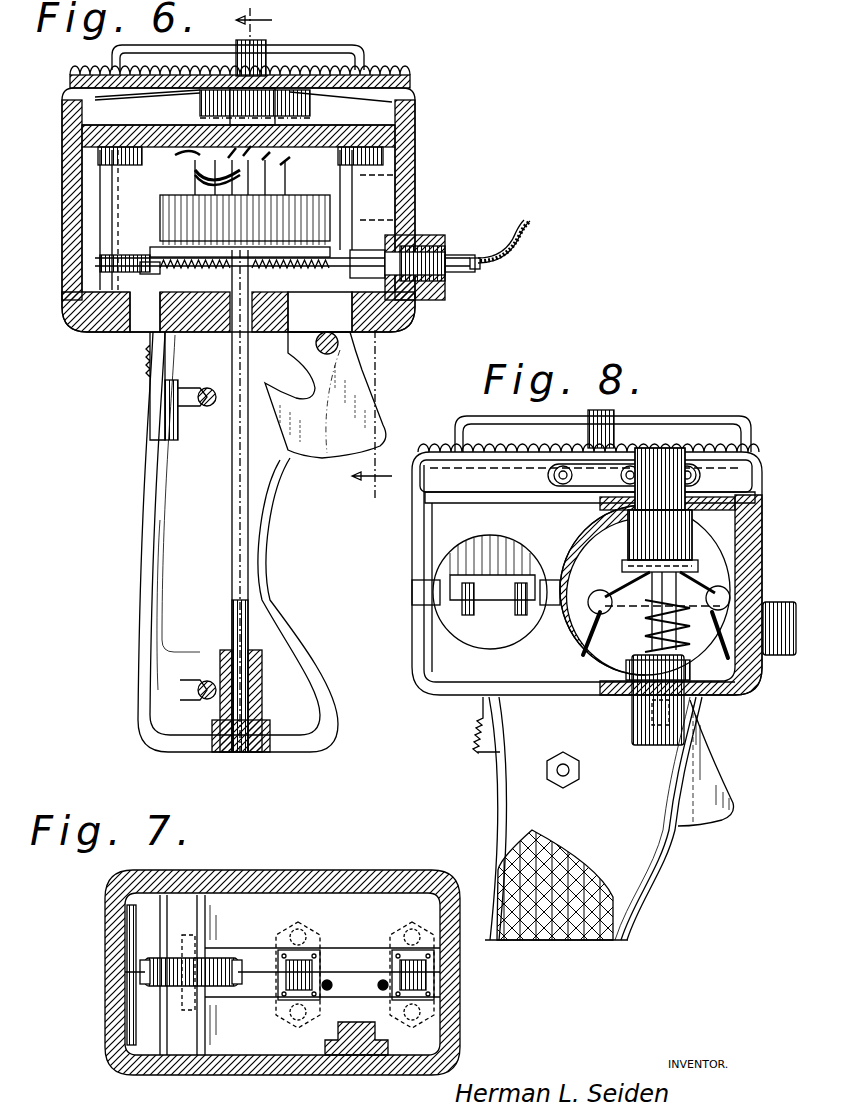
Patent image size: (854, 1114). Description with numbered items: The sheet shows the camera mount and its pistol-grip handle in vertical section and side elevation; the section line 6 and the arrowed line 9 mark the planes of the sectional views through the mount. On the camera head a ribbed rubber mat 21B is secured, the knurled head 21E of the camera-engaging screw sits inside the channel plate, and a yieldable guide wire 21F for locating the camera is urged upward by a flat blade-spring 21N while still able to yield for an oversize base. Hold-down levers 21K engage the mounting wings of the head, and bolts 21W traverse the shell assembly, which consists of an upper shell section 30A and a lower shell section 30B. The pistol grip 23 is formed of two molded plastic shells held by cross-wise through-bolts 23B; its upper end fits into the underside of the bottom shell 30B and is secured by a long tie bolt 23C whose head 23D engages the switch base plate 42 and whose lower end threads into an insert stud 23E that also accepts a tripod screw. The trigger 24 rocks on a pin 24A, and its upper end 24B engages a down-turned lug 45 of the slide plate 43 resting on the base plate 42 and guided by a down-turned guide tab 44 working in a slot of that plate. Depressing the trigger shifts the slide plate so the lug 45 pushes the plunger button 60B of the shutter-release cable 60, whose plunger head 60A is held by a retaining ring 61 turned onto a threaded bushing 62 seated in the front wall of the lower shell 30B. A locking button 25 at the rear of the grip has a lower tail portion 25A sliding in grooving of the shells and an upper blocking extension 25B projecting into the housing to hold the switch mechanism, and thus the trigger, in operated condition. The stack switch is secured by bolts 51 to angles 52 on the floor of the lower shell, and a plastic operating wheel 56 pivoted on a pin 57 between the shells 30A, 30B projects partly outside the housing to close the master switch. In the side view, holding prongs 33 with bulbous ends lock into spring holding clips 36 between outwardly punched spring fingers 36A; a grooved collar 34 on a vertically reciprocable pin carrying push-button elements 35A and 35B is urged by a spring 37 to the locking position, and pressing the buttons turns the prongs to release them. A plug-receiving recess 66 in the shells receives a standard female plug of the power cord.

In FIG. 8, the section line 6 is at (520, 608).
In FIG. 6, the section line 9 is at (319, 254).
In FIG. 6, the ribbed rubber mat 21B is at (405, 70).
In FIG. 6, the knurled head 21E is at (199, 99).
In FIG. 6, the guide wire 21F is at (340, 46).
In FIG. 8, the hold-down levers 21K is at (552, 470).
In FIG. 6, the flat blade-spring 21N is at (345, 108).
In FIG. 6, the bolts 21W is at (100, 168).
In FIG. 6, the pistol grip 23 is at (140, 530).
In FIG. 8, the pistol grip 23 is at (632, 886).
In FIG. 6, the through-bolts 23B is at (205, 408).
In FIG. 8, the through-bolts 23B is at (556, 786).
In FIG. 6, the tie bolt 23C is at (240, 512).
In FIG. 6, the head 23D is at (240, 247).
In FIG. 6, the insert stud 23E is at (255, 700).
In FIG. 6, the control trigger 24 is at (362, 420).
In FIG. 8, the control trigger 24 is at (718, 790).
In FIG. 6, the pin 24A is at (345, 322).
In FIG. 6, the upper end 24B is at (335, 350).
In FIG. 6, the locking button 25 is at (150, 400).
In FIG. 8, the locking button 25 is at (483, 752).
In FIG. 6, the tail portion 25A is at (165, 415).
In FIG. 6, the blocking extension 25B is at (140, 332).
In FIG. 7, the upper shell section 30A is at (108, 883).
In FIG. 6, the lower shell section 30B is at (100, 325).
In FIG. 8, the lower shell section 30B is at (412, 652).
In FIG. 7, the lower shell section 30B is at (115, 1068).
In FIG. 8, the holding prongs 33 is at (730, 596).
In FIG. 8, the grooved collar 34 is at (585, 562).
In FIG. 8, the push-button element 35A is at (680, 492).
In FIG. 8, the push-button element 35B is at (632, 717).
In FIG. 7, the spring holding clips 36 is at (400, 950).
In FIG. 7, the spring fingers 36A is at (292, 988).
In FIG. 8, the spring 37 is at (694, 642).
In FIG. 6, the switch base plate 42 is at (333, 258).
In FIG. 6, the slide plate 43 is at (393, 196).
In FIG. 6, the guide tab 44 is at (100, 262).
In FIG. 6, the lug 45 is at (140, 270).
In FIG. 6, the bolts 51 is at (330, 183).
In FIG. 6, the angles 52 is at (160, 212).
In FIG. 7, the operating wheel 56 is at (150, 962).
In FIG. 7, the pin 57 is at (182, 1000).
In FIG. 6, the cable 60 is at (520, 228).
In FIG. 6, the plunger head 60A is at (470, 272).
In FIG. 6, the plunger button 60B is at (440, 290).
In FIG. 6, the retaining ring 61 is at (440, 246).
In FIG. 8, the retaining ring 61 is at (779, 606).
In FIG. 6, the threaded bushing 62 is at (402, 238).
In FIG. 8, the plug-receiving recess 66 is at (500, 556).